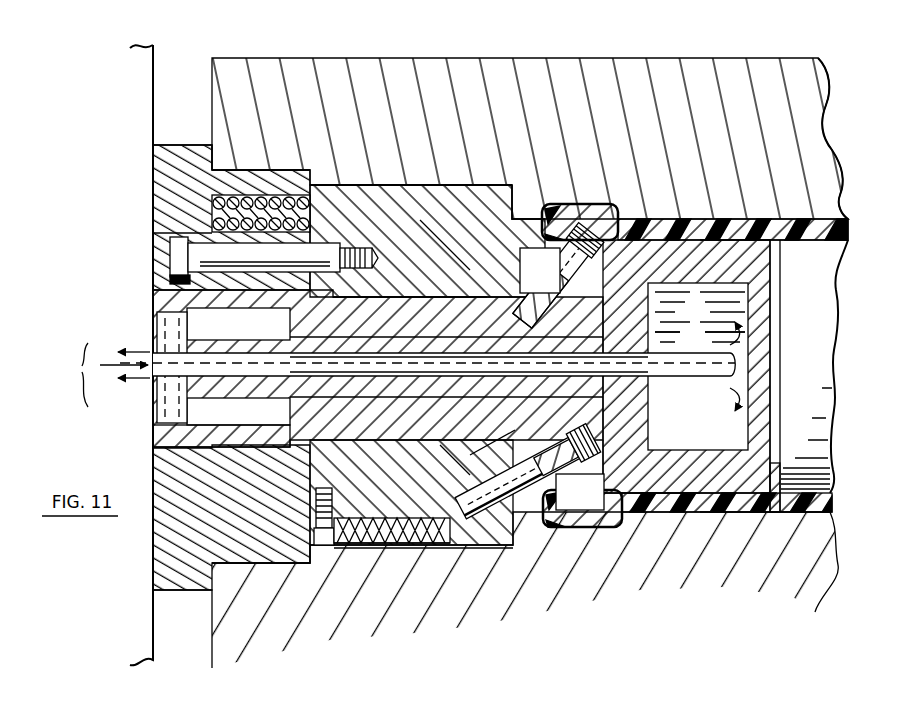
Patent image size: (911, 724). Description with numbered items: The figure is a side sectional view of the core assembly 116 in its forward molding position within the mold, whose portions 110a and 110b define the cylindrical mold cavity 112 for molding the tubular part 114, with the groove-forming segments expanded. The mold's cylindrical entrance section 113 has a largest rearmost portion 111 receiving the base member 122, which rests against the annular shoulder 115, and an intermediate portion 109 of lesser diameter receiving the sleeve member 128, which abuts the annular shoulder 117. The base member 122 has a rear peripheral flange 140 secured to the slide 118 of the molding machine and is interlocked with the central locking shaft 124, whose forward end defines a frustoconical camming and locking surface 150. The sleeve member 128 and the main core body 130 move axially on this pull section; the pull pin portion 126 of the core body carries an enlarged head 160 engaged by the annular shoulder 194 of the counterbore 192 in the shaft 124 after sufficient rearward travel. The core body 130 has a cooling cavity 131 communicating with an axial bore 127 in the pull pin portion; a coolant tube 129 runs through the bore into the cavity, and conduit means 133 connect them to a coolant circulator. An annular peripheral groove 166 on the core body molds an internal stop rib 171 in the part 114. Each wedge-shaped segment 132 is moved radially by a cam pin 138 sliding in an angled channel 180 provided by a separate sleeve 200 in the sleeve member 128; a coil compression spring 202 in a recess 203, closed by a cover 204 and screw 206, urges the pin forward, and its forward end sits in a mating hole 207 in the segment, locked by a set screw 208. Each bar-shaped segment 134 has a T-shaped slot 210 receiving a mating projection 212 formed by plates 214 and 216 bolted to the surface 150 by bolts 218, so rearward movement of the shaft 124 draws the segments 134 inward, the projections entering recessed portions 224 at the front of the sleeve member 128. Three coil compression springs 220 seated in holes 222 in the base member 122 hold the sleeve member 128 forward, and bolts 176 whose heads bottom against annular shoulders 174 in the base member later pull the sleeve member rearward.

The intermediate portion 109 is at (427, 241).
The mold portion 110a is at (355, 70).
The mold portion 110b is at (212, 663).
The rearmost portion 111 is at (240, 181).
The mold cavity 112 is at (752, 232).
The entrance section 113 is at (445, 236).
The tubular part 114 is at (848, 210).
The annular shoulder 115 is at (297, 170).
The core assembly 116 is at (395, 185).
The annular shoulder 117 is at (465, 195).
The slide 118 is at (157, 52).
The base member 122 is at (162, 143).
The central locking stud member or shaft 124 is at (427, 296).
The central pull pin portion 126 is at (215, 394).
The axial bore 127 is at (660, 351).
The sleeve member 128 is at (325, 183).
The coolant delivery tube 129 is at (668, 377).
The main core body 130 is at (700, 238).
The cooling cavity 131 is at (750, 290).
The wedge-shaped segments 132 is at (580, 520).
The conduit means 133 is at (107, 375).
The bar-shaped segments 134 is at (565, 208).
The cam pin 138 is at (617, 500).
The peripheral flange 140 is at (198, 145).
The frustoconical camming and locking surface 150 is at (620, 438).
The enlarged head 160 is at (168, 330).
The annular peripheral groove 166 is at (772, 512).
The annular internal stop rib 171 is at (777, 461).
The annular shoulders 174 is at (172, 279).
The bolts 176 is at (175, 256).
The angled slot or channel 180 is at (457, 461).
The counterbore 192 is at (160, 405).
The annular shoulder 194 is at (290, 326).
The sleeve 200 is at (485, 546).
The coil compression spring 202 is at (418, 545).
The recess 203 is at (355, 548).
The cover 204 is at (390, 548).
The screw 206 is at (303, 563).
The mating hole 207 is at (492, 448).
The set screw 208 is at (580, 492).
The elongated slot 210 is at (683, 366).
The projection 212 is at (530, 290).
The plate 214 is at (650, 300).
The plate 216 is at (650, 326).
The bolts 218 is at (650, 353).
The springs 220 is at (215, 232).
The holes 222 is at (212, 205).
The recessed portions 224 is at (514, 264).